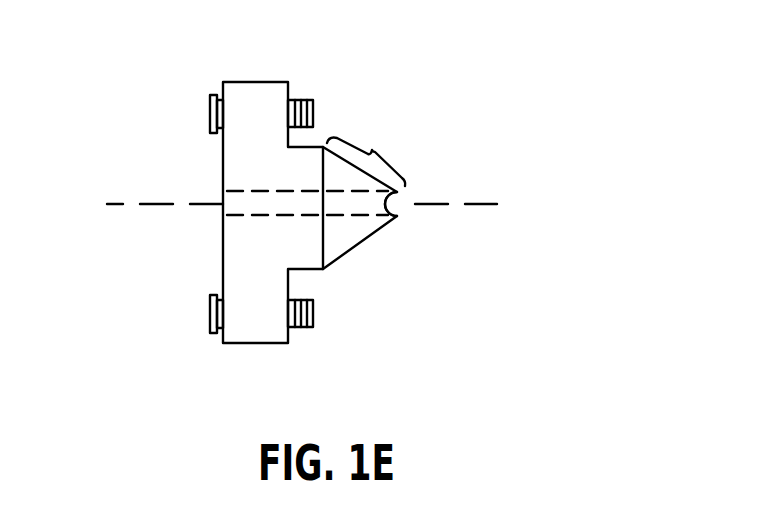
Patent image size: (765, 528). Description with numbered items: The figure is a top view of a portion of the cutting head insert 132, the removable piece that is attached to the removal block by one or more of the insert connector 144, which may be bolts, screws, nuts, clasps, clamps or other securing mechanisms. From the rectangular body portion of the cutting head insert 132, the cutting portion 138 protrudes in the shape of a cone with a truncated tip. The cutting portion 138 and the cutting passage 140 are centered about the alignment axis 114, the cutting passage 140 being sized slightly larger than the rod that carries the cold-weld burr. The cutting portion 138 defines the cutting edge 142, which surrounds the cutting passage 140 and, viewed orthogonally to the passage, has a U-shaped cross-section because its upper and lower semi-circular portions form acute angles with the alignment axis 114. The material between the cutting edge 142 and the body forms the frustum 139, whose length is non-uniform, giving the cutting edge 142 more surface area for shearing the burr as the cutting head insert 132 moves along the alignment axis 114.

The cutting head insert 132 is at (458, 65).
The insert connector 144 is at (212, 120).
The cutting portion 138 is at (342, 233).
The cutting edge 142 is at (395, 192).
The frustum 139 is at (375, 150).
The cutting passage 140 is at (240, 191).
The alignment axis 114 is at (477, 204).